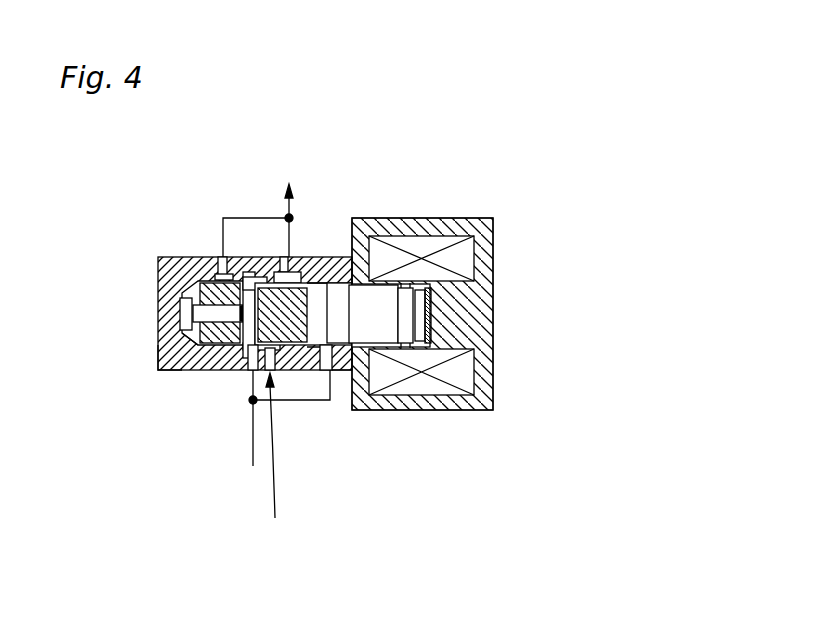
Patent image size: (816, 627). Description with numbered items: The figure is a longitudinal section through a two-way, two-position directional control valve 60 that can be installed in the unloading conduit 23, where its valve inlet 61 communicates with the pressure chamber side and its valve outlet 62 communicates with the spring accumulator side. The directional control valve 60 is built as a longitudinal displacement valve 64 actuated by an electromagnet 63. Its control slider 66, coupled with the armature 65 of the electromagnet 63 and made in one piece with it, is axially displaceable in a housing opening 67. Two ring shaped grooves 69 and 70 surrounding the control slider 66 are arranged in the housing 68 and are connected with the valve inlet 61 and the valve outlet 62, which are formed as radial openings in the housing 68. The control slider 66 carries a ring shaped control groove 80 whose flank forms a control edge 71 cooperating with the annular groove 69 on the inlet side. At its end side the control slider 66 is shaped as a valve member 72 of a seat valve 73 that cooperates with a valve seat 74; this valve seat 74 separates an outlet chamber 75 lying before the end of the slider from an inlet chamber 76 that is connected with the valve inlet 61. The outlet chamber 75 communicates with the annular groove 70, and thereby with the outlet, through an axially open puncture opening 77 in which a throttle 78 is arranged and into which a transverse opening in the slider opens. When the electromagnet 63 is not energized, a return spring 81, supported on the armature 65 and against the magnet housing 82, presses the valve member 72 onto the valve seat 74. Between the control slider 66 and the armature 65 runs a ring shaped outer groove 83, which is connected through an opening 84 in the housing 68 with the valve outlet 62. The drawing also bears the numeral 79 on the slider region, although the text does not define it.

The unloading conduit 23 is at (292, 205).
The 2/2 directional control valve 60 is at (464, 213).
The valve inlet 61 is at (300, 265).
The valve outlet 62 is at (248, 373).
The electromagnet 63 is at (432, 384).
The longitudinal displacement valve 64 is at (276, 446).
The armature 65 is at (392, 346).
The control slider 66 is at (325, 372).
The housing opening 67 is at (270, 276).
The housing 68 is at (168, 358).
The ring shaped groove 69 is at (330, 268).
The ring shaped groove 70 is at (240, 373).
The control edge 71 is at (278, 262).
The valve member 72 is at (198, 301).
The seat valve 73 is at (180, 282).
The valve seat 74 is at (192, 275).
The outlet chamber 75 is at (190, 325).
The inlet chamber 76 is at (212, 277).
The puncture opening 77 is at (170, 372).
The throttle 78 is at (250, 276).
The piston 79 is at (287, 372).
The control groove 80 is at (255, 373).
The return spring 81 is at (414, 287).
The magnet housing 82 is at (490, 218).
The outer groove 83 is at (405, 287).
The opening 84 is at (345, 372).